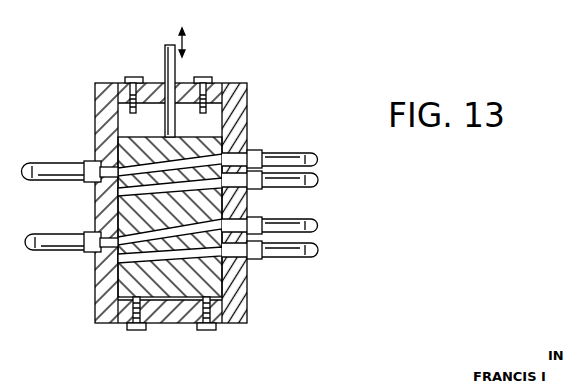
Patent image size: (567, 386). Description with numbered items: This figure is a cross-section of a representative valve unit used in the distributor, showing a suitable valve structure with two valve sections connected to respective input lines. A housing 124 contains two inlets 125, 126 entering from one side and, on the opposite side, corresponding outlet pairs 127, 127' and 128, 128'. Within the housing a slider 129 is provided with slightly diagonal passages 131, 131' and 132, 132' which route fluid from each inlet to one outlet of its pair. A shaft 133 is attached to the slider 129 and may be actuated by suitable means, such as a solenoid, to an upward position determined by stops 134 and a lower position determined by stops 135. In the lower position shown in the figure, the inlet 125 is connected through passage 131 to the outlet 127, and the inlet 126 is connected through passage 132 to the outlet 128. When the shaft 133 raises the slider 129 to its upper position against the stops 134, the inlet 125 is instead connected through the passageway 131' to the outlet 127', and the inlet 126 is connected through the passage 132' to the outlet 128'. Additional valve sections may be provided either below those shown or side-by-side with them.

The housing 124 is at (100, 120).
The inlet 125 is at (76, 163).
The inlet 126 is at (62, 235).
The outlet 127 is at (270, 145).
The outlet 127' is at (277, 155).
The outlet 128 is at (290, 243).
The outlet 128' is at (270, 263).
The slider 129 is at (203, 140).
The diagonal passage 131 is at (137, 177).
The diagonal passage 131' is at (131, 198).
The diagonal passage 132 is at (136, 249).
The diagonal passage 132' is at (136, 279).
The shaft 133 is at (178, 63).
The stops 134 is at (128, 77).
The stops 135 is at (195, 352).